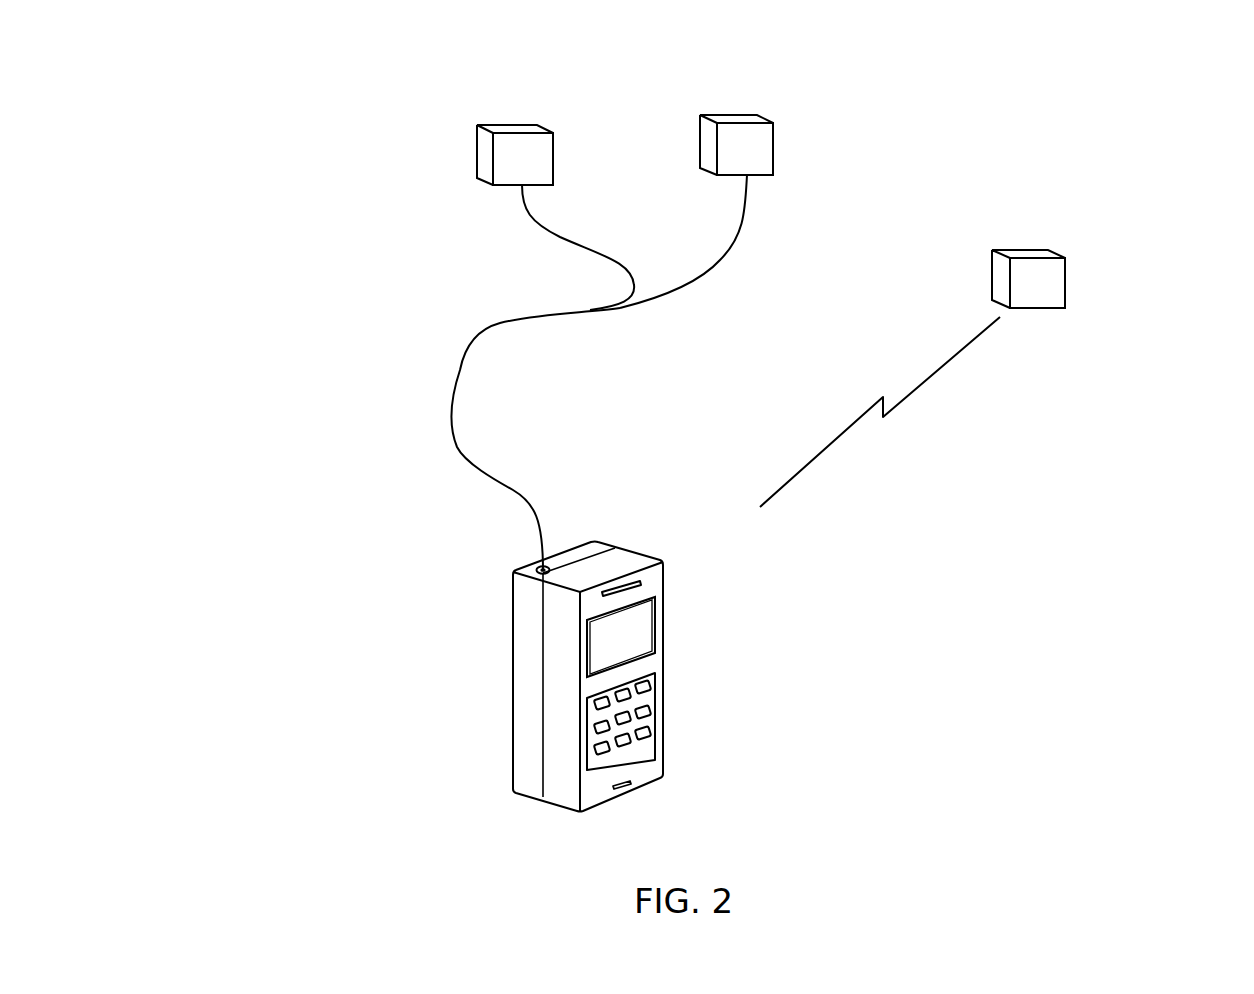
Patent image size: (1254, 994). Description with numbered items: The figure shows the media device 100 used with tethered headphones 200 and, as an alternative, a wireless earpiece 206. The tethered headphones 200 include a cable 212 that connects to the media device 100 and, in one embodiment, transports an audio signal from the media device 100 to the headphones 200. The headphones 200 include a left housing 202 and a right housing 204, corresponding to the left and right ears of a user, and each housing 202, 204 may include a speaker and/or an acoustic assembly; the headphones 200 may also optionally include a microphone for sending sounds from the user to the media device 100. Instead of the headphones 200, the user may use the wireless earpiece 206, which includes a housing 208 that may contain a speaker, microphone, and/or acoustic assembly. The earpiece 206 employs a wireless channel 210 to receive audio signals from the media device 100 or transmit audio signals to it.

The media device 100 is at (523, 697).
The tethered headphones 200 is at (356, 96).
The left housing 202 is at (553, 157).
The right housing 204 is at (773, 147).
The wireless earpiece 206 is at (1138, 223).
The housing 208 is at (1063, 282).
The wireless channel 210 is at (920, 387).
The cable 212 is at (467, 350).